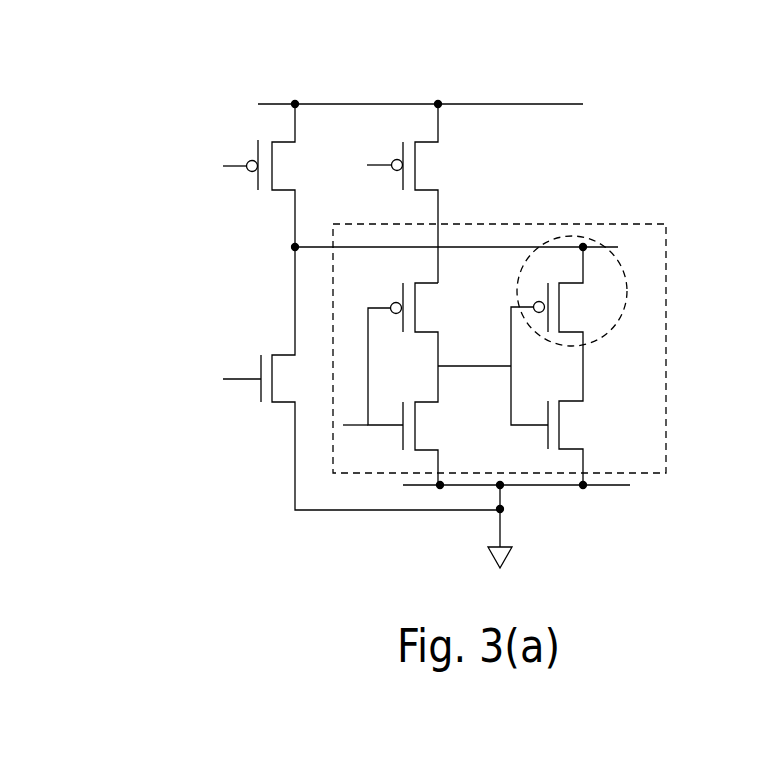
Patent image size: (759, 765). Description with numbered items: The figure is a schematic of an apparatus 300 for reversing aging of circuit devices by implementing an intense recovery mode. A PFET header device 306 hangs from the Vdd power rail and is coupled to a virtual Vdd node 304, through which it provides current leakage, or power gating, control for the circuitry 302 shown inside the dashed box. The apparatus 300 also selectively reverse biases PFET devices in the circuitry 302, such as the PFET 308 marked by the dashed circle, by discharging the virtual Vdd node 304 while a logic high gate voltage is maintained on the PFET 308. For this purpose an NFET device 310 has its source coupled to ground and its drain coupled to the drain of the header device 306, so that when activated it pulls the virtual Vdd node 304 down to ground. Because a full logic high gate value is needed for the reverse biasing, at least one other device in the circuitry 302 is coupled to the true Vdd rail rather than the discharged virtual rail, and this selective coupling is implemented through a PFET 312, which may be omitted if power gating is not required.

The apparatus 300 is at (190, 80).
The circuitry 302 is at (666, 317).
The virtual Vdd node 304 is at (500, 245).
The header device 306 is at (285, 192).
The PFET 308 is at (607, 332).
The NFET device 310 is at (287, 406).
The PFET 312 is at (430, 138).